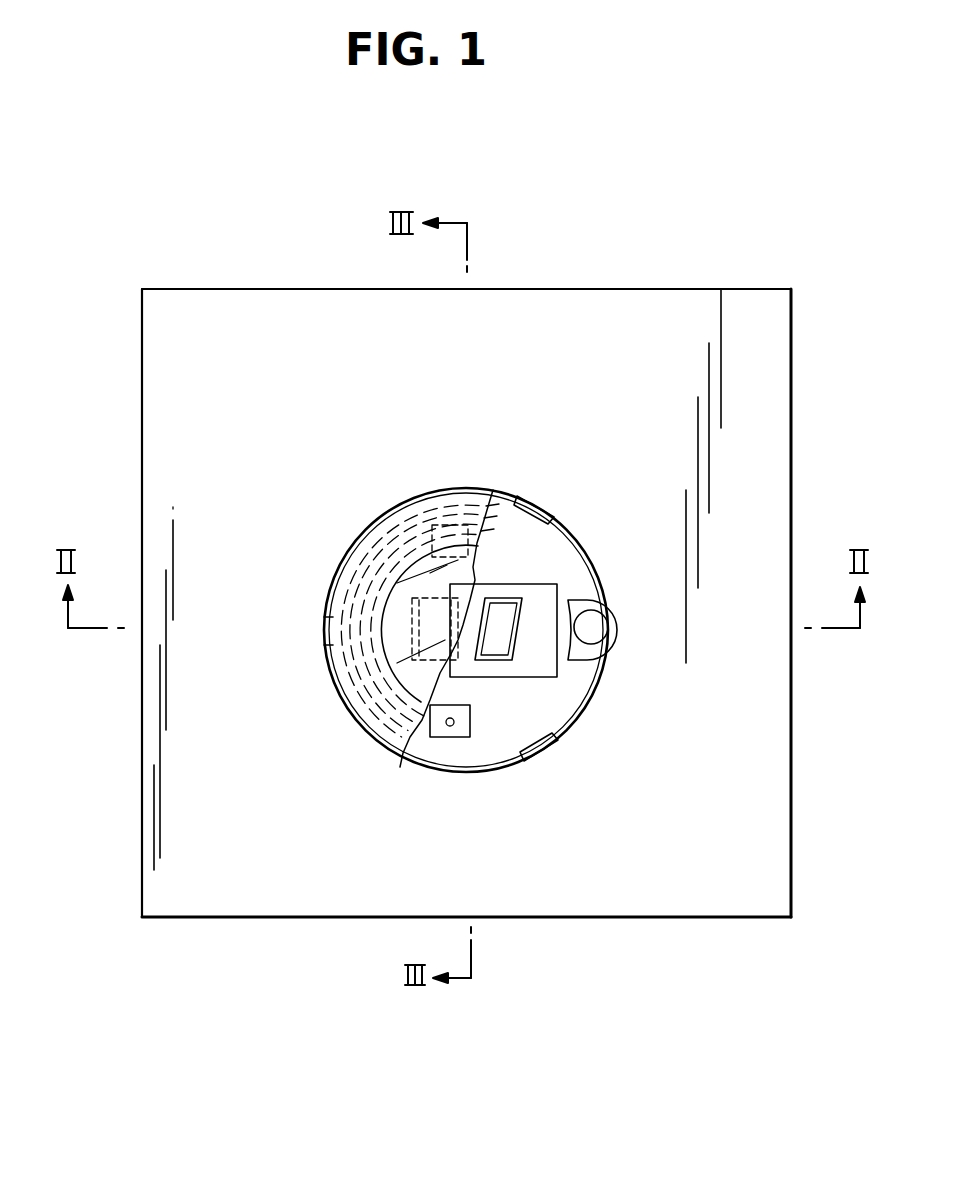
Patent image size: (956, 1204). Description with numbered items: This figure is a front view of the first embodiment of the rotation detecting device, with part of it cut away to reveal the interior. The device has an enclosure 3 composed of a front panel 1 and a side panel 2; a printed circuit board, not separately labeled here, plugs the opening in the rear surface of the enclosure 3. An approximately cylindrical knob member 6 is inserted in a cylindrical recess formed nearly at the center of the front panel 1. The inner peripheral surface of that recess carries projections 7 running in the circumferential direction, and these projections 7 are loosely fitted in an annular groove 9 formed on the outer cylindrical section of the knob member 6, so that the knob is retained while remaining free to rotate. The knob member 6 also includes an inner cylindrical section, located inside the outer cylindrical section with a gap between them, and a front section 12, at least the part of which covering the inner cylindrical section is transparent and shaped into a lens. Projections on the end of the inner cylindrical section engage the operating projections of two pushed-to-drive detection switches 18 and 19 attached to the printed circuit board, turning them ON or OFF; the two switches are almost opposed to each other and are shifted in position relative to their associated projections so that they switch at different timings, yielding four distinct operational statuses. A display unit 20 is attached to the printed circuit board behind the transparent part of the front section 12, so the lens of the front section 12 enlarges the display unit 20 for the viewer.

The front panel 1 is at (197, 365).
The side panel 2 is at (142, 438).
The enclosure 3 is at (135, 787).
The knob member 6 is at (386, 496).
The projections 7 is at (341, 618).
The annular groove 9 is at (328, 672).
The front section 12 is at (402, 678).
The detection switch 18 is at (448, 740).
The detection switch 19 is at (474, 497).
The display unit 20 is at (538, 667).